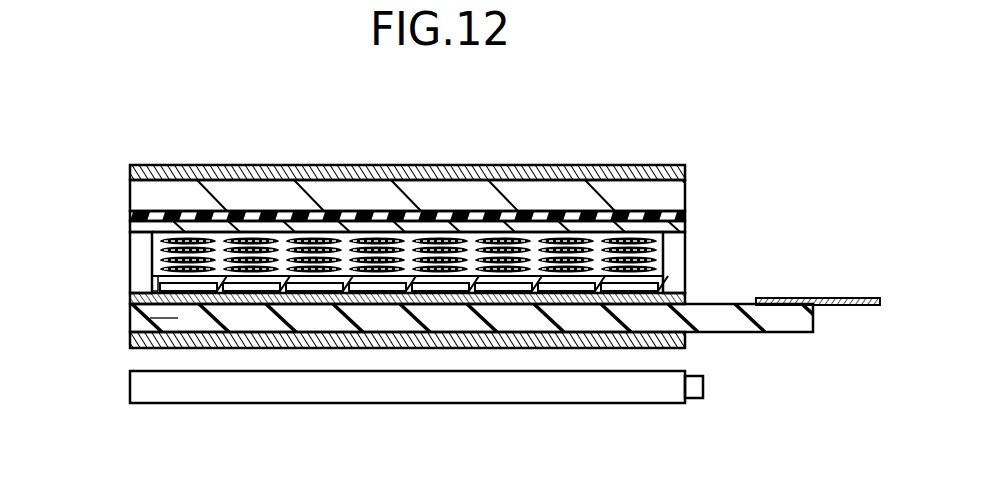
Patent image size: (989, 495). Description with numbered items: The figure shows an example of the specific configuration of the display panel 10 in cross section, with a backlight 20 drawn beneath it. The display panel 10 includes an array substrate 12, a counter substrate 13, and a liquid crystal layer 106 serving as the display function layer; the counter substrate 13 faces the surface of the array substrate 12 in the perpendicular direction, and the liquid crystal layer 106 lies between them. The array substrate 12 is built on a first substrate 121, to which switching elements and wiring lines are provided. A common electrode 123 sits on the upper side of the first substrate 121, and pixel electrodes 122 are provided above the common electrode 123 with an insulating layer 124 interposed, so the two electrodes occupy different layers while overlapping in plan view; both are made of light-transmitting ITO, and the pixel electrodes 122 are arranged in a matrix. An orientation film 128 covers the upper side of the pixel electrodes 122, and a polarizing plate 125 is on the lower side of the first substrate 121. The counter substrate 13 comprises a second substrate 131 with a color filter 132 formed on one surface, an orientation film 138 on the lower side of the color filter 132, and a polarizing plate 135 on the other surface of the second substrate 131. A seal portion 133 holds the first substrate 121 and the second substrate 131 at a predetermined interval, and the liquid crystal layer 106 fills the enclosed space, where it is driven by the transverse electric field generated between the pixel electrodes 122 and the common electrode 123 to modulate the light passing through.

The display panel 10 is at (625, 134).
The array substrate 12 is at (53, 247).
The counter substrate 13 is at (53, 148).
The backlight 20 is at (363, 393).
The liquid crystal layer 106 is at (668, 253).
The first substrate 121 is at (160, 350).
The pixel electrodes 122 is at (158, 289).
The common electrode 123 is at (148, 308).
The insulating layer 124 is at (153, 304).
The polarizing plate 125 is at (164, 318).
The orientation film 128 is at (158, 280).
The second substrate 131 is at (138, 187).
The color filter 132 is at (138, 216).
The seal portion 133 is at (678, 275).
The polarizing plate 135 is at (134, 172).
The orientation film 138 is at (138, 226).